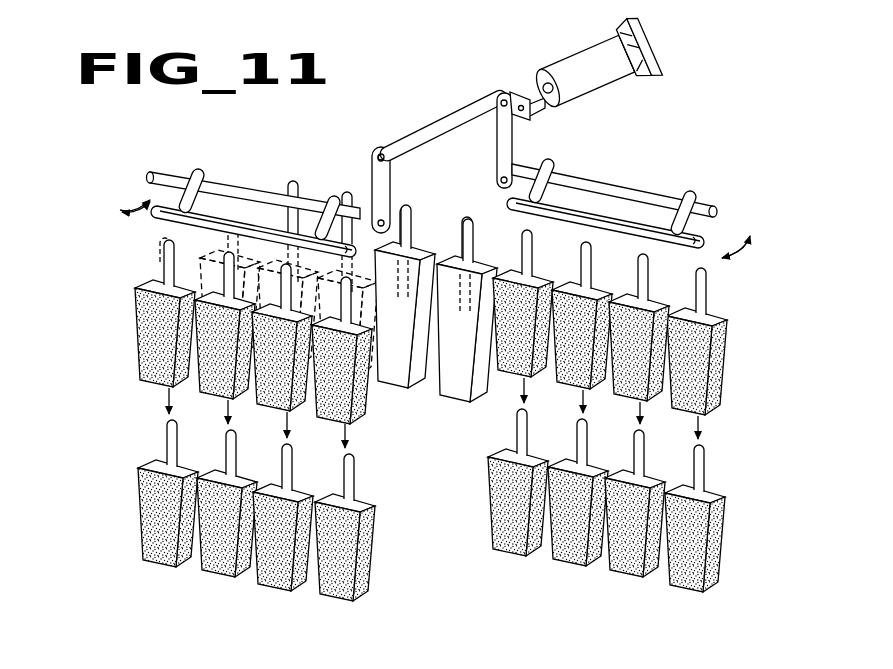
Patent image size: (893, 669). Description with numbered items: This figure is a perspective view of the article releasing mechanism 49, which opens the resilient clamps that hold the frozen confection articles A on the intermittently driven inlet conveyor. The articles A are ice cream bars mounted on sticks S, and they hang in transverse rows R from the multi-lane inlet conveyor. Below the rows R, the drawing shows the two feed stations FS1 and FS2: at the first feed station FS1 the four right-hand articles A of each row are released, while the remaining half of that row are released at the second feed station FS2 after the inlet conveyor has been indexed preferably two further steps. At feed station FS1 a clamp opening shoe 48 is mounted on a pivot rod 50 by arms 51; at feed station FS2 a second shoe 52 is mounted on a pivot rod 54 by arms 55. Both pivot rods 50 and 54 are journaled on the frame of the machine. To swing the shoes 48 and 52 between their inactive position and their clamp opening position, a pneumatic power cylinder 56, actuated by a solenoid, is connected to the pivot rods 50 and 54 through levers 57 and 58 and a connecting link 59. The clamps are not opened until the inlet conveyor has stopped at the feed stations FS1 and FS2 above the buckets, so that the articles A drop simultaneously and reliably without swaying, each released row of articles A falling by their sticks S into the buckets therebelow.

The clamp opening shoe 48 is at (636, 240).
The article releasing mechanism 49 is at (408, 124).
The pivot rod 50 is at (593, 188).
The arms 51 is at (548, 172).
The shoe 52 is at (176, 222).
The pivot rod 54 is at (223, 190).
The arms 55 is at (199, 170).
The pneumatic power cylinder 56 is at (593, 53).
The lever 57 is at (518, 125).
The lever 58 is at (370, 170).
The connecting link 59 is at (482, 98).
The articles A is at (419, 408).
The sticks S is at (228, 270).
The transverse rows R is at (150, 320).
The feed station FS1 is at (726, 296).
The feed station FS2 is at (116, 292).